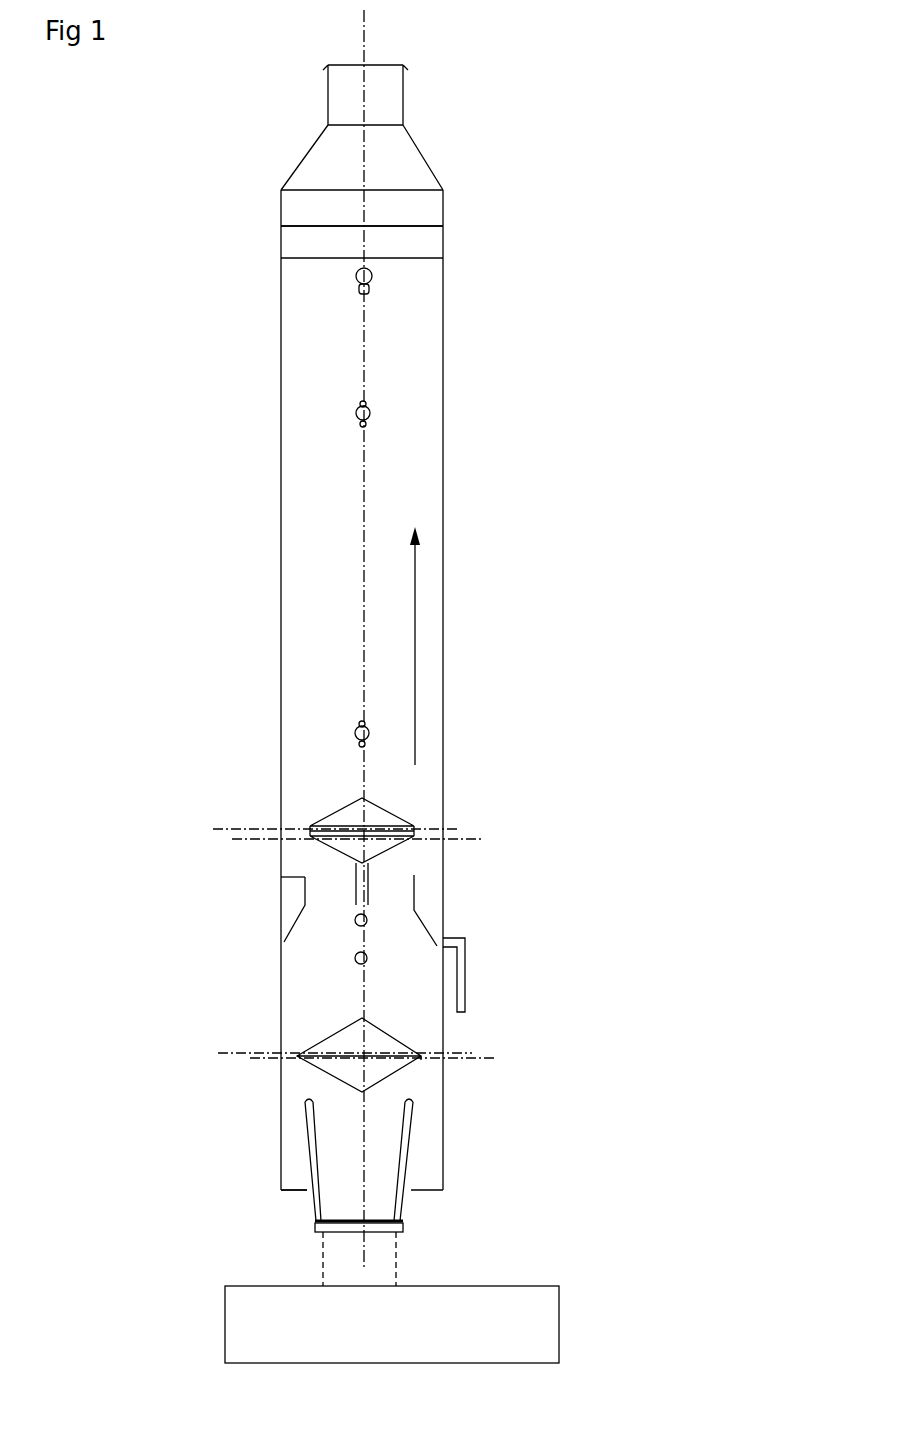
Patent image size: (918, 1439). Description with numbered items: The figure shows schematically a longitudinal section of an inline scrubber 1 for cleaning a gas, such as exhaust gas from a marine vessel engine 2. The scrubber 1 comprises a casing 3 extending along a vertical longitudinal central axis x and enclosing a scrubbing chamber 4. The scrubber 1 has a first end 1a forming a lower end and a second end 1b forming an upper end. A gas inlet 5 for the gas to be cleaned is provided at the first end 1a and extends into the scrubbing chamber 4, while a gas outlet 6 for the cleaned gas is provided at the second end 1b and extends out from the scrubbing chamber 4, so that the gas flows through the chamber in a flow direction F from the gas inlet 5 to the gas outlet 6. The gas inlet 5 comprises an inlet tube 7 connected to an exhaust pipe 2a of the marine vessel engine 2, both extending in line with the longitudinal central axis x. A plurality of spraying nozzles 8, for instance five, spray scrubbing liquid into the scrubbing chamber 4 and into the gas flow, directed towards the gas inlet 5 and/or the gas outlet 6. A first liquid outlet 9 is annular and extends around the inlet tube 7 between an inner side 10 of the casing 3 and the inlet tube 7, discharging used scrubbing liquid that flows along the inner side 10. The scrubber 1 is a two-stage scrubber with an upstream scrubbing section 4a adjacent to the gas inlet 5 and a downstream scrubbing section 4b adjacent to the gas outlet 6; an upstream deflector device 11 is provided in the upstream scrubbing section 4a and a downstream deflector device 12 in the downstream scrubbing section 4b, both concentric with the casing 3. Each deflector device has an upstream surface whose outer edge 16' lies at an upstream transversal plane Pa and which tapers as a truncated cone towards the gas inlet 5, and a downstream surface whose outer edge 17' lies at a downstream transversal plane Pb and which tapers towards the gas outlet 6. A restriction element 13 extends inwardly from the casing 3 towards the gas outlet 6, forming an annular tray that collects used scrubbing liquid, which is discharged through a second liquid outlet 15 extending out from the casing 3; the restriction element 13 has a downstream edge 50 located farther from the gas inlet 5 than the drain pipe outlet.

The inline scrubber 1 is at (482, 86).
The first end 1a is at (315, 1222).
The second end 1b is at (328, 66).
The marine vessel engine 2 is at (528, 1302).
The exhaust pipe 2a is at (325, 1253).
The casing 3 is at (283, 403).
The scrubbing chamber 4 is at (331, 582).
The upstream scrubbing section 4a is at (417, 985).
The downstream scrubbing section 4b is at (347, 772).
The gas inlet 5 is at (345, 1147).
The gas outlet 6 is at (357, 100).
The inlet tube 7 is at (410, 1152).
The spraying nozzle 8 is at (360, 410).
The first liquid outlet 9 is at (290, 1190).
The inner side of the casing 10 is at (283, 532).
The upstream deflector device 11 is at (292, 1071).
The downstream deflector device 12 is at (296, 815).
The restriction element 13 is at (305, 890).
The second liquid outlet 15 is at (465, 940).
The outer edge of the upstream surface 16' is at (506, 973).
The outer edge of the downstream surface 17' is at (233, 938).
The downstream edge of the restriction element 50 is at (305, 877).
The flow direction F is at (415, 612).
The upstream transversal plane Pa is at (474, 840).
The downstream transversal plane Pb is at (457, 830).
The longitudinal central axis x is at (367, 137).